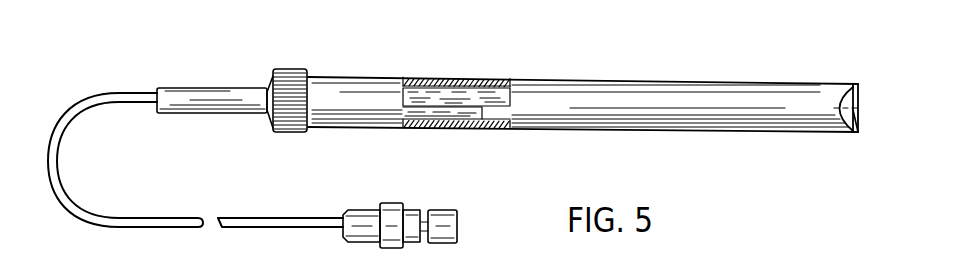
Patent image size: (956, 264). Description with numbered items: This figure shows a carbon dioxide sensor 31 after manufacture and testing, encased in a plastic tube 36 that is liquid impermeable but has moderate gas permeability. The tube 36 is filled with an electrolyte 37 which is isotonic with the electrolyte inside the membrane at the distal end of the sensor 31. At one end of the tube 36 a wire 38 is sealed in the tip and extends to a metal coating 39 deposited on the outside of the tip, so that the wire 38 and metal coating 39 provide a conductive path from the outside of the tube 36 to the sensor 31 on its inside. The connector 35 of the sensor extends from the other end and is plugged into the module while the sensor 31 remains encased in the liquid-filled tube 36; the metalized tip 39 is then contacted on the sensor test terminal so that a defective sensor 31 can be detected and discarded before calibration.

The sensor 31 is at (482, 121).
The connector 35 is at (409, 210).
The plastic tube 36 is at (612, 82).
The electrolyte 37 is at (490, 90).
The wire 38 is at (859, 123).
The metal coating 39 is at (853, 88).